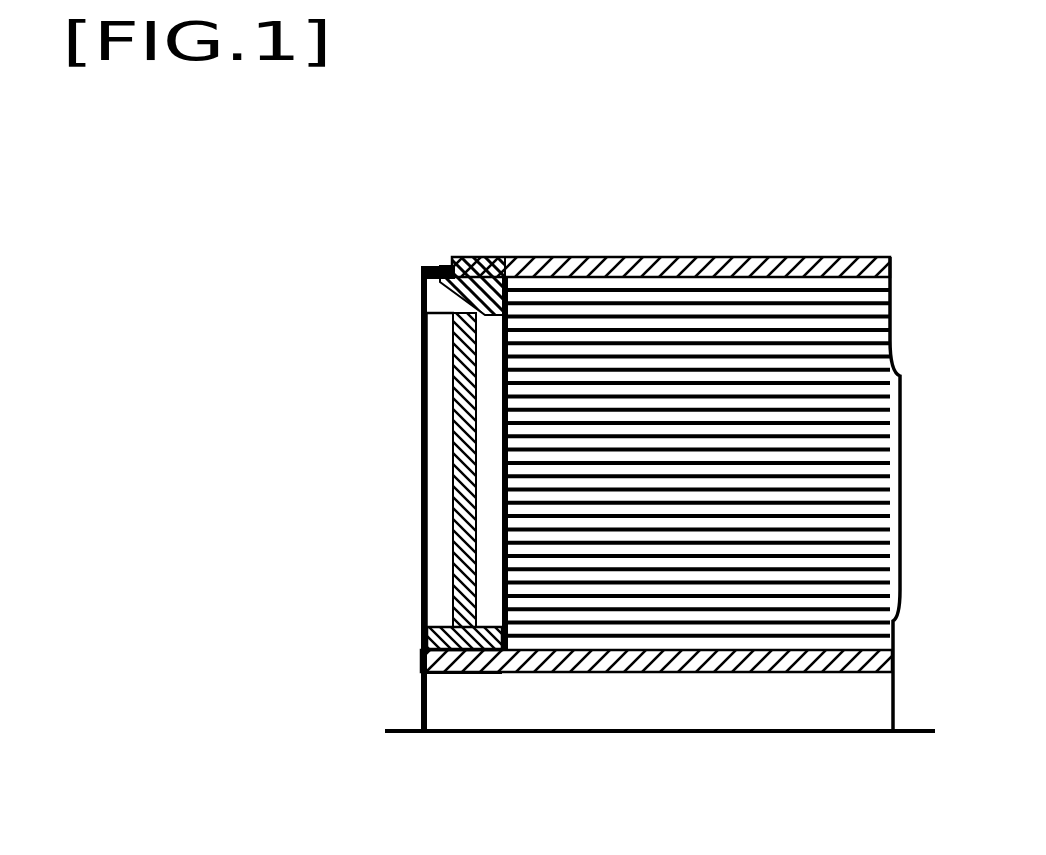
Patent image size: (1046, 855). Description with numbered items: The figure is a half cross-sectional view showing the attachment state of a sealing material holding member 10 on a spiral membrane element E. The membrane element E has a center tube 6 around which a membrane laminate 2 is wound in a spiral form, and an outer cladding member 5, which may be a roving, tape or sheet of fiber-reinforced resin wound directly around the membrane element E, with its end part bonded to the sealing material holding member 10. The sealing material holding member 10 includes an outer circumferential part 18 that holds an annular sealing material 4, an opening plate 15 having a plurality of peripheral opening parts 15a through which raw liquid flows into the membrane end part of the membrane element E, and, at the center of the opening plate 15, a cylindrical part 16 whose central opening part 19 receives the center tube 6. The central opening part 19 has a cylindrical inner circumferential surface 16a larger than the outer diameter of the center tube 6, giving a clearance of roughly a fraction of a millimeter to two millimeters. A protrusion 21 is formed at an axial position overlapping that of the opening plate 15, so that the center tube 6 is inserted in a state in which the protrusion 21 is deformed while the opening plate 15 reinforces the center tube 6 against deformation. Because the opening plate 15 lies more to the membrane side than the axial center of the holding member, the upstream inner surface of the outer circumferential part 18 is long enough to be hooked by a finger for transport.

The membrane laminate 2 is at (568, 343).
The sealing material 4 is at (443, 252).
The outer cladding member 5 is at (833, 257).
The center tube 6 is at (417, 658).
The sealing material holding member 10 is at (430, 440).
The opening plate 15 is at (452, 527).
The peripheral opening part 15a is at (432, 568).
The cylindrical part 16 is at (440, 638).
The inner circumferential surface 16a is at (423, 647).
The outer circumferential part 18 is at (398, 296).
The central opening part 19 is at (386, 708).
The protrusion 21 is at (463, 672).
The membrane element E is at (673, 233).